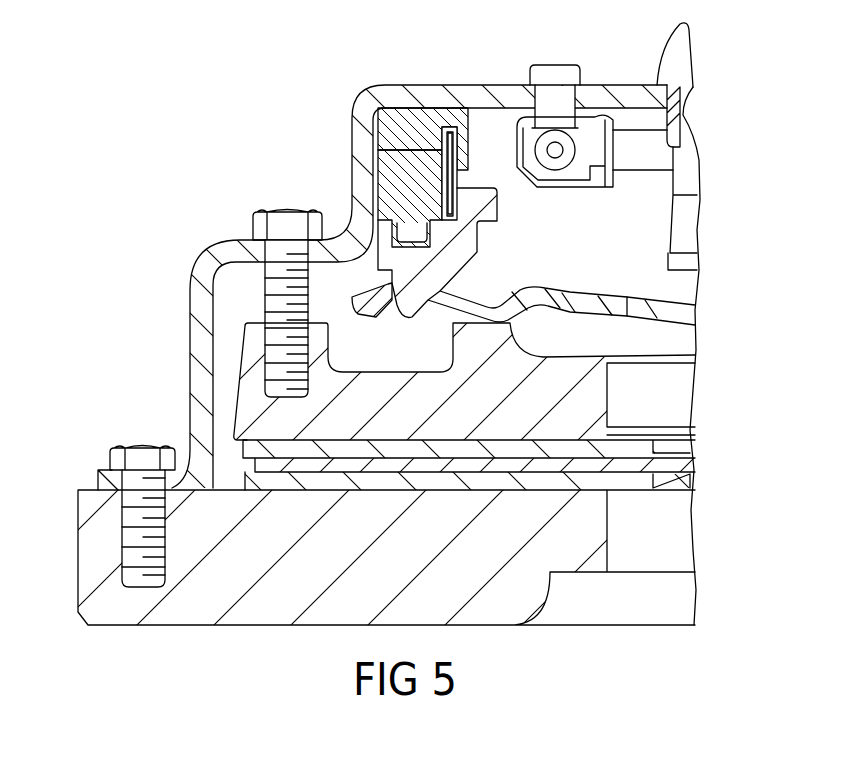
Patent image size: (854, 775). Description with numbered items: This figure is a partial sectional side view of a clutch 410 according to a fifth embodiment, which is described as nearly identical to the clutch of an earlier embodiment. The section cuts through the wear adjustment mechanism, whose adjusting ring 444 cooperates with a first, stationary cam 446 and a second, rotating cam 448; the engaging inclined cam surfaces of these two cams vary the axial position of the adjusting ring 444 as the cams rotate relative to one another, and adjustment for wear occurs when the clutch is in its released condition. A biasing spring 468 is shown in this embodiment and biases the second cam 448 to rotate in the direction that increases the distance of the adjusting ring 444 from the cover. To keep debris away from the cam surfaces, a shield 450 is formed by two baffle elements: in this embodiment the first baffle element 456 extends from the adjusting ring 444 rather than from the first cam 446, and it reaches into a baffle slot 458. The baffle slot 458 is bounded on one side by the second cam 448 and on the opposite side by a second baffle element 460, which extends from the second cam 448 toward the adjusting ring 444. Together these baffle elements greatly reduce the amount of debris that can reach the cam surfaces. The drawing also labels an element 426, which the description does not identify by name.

The clutch 410 is at (228, 175).
The mounting bracket 426 is at (190, 283).
The adjusting ring 444 is at (478, 258).
The first cam 446 is at (380, 186).
The second cam 448 is at (385, 133).
The shield 450 is at (505, 182).
The first baffle element 456 is at (465, 184).
The baffle slot 458 is at (442, 150).
The second baffle element 460 is at (480, 142).
The biasing spring 468 is at (572, 138).